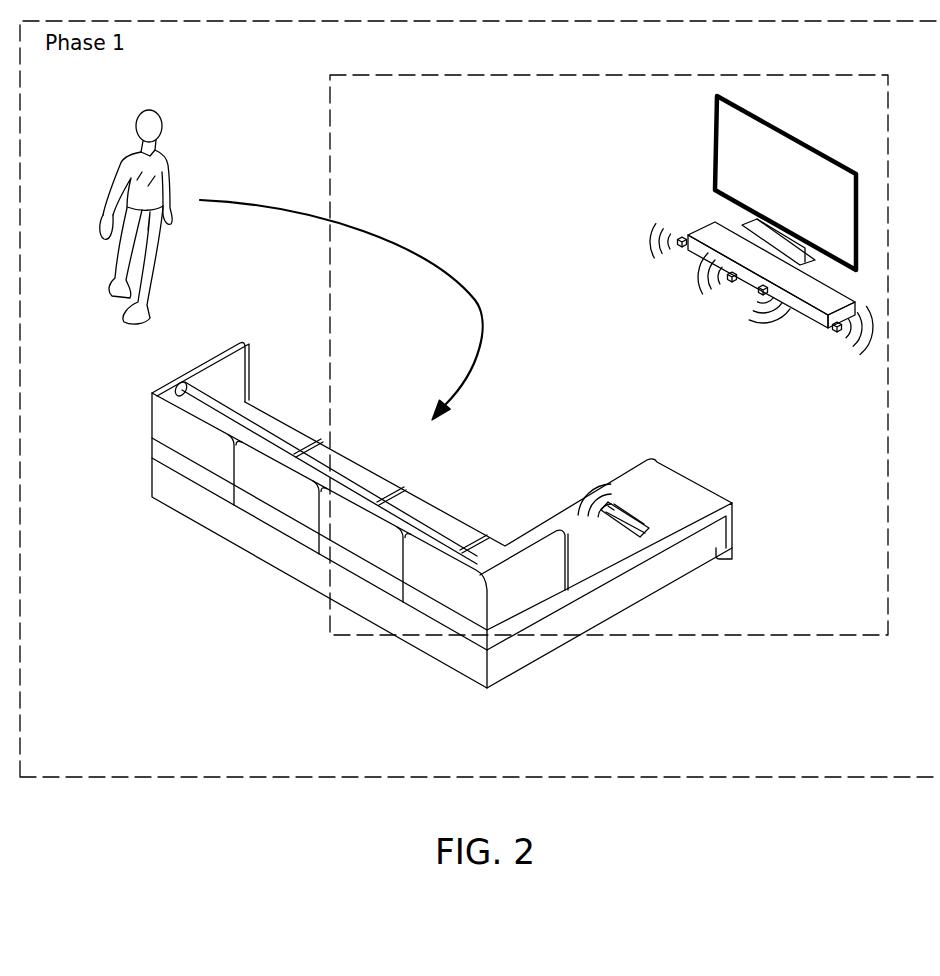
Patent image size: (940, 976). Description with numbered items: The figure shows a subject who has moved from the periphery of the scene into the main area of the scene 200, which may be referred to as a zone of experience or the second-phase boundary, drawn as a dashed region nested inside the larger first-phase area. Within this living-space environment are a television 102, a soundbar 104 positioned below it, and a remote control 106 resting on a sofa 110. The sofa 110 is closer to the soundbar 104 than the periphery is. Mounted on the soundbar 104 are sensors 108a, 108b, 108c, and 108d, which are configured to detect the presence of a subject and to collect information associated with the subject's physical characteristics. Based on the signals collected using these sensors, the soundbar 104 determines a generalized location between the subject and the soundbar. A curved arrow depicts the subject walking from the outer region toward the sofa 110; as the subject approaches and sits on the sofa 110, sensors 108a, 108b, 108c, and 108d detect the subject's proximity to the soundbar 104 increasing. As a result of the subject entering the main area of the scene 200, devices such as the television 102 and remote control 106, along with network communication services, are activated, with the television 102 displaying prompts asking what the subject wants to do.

The television 102 is at (803, 140).
The soundbar 104 is at (838, 292).
The remote control 106 is at (633, 512).
The sensor 108a is at (682, 236).
The sensor 108b is at (735, 285).
The sensor 108c is at (760, 297).
The sensor 108d is at (835, 336).
The sofa 110 is at (273, 410).
The main area of the scene 200 is at (325, 96).